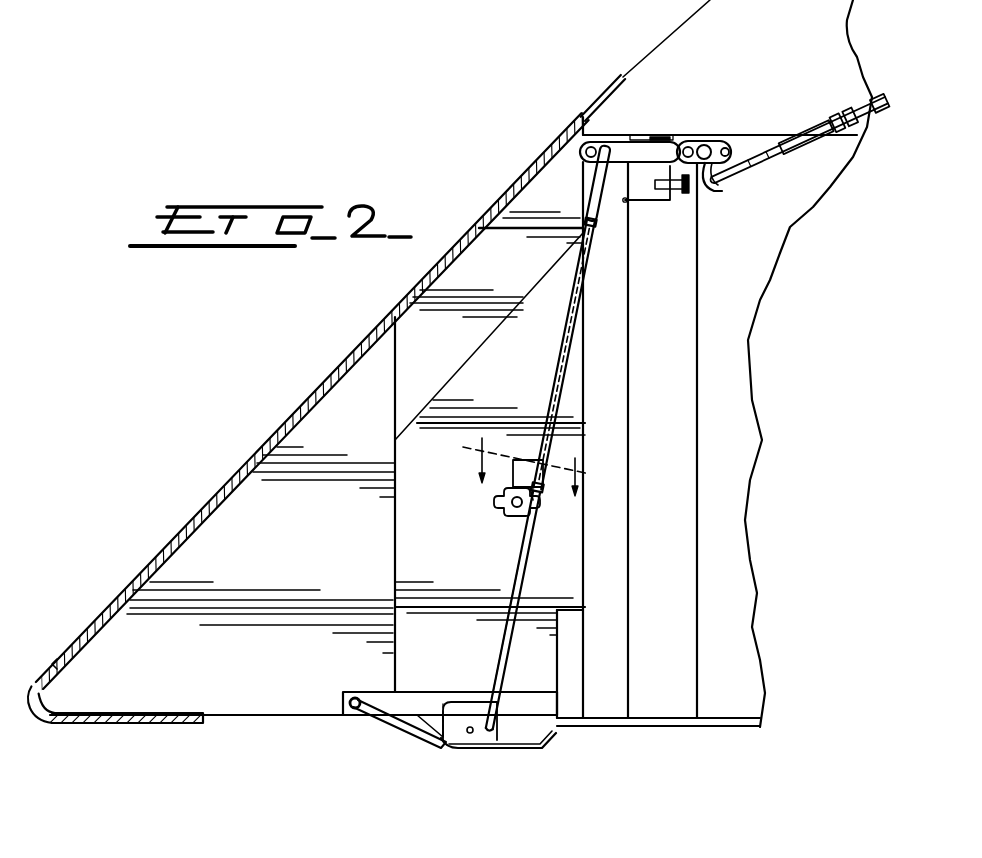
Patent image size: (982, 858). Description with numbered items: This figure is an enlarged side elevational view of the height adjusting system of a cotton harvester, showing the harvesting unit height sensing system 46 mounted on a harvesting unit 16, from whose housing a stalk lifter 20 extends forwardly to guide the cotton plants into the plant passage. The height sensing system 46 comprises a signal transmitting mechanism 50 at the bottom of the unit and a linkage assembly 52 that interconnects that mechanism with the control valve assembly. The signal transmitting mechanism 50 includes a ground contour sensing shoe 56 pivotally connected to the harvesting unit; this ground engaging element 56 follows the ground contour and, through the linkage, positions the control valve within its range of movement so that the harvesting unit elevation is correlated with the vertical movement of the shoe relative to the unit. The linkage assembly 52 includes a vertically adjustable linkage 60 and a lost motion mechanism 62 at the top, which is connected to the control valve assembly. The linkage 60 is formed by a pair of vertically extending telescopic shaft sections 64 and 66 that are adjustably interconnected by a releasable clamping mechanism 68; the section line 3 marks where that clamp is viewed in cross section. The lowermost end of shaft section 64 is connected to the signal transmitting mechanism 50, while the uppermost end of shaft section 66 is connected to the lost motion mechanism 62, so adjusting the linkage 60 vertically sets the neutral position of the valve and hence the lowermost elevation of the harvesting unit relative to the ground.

The harvesting unit 16 is at (613, 53).
The stalk lifter 20 is at (230, 490).
The harvesting unit height sensing system 46 is at (505, 252).
The linkage assembly 52 is at (550, 563).
The lost motion mechanism 62 is at (717, 130).
The vertically adjustable linkage 60 is at (575, 412).
The shaft section 66 is at (553, 385).
The shaft section 64 is at (495, 670).
The releasable clamping mechanism 68 is at (487, 527).
The section line 3- 3 is at (525, 480).
The signal transmitting mechanism 50 is at (478, 765).
The ground contour sensing shoe 56 is at (523, 748).